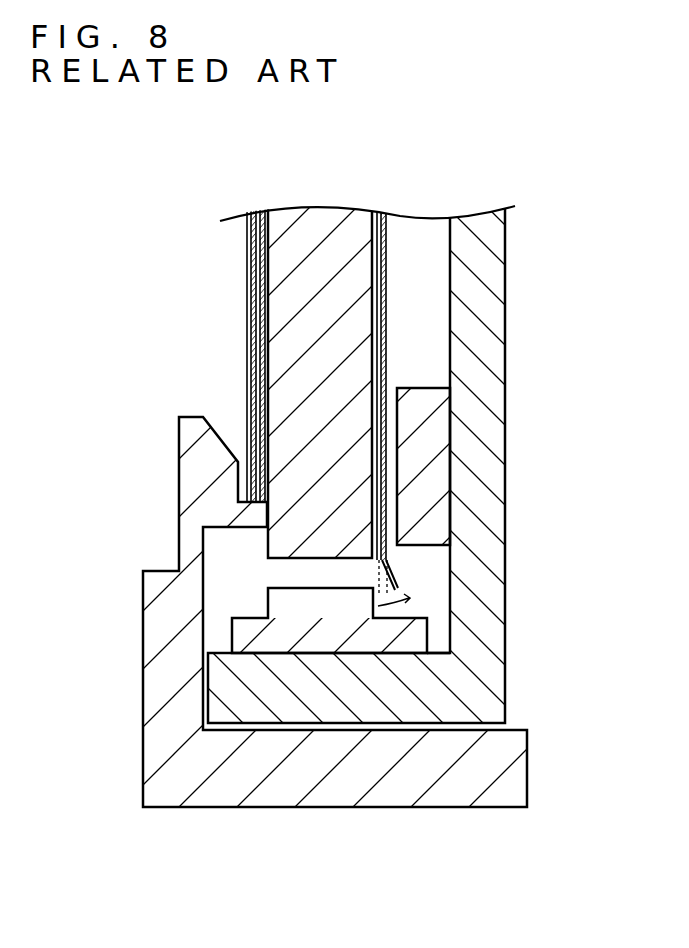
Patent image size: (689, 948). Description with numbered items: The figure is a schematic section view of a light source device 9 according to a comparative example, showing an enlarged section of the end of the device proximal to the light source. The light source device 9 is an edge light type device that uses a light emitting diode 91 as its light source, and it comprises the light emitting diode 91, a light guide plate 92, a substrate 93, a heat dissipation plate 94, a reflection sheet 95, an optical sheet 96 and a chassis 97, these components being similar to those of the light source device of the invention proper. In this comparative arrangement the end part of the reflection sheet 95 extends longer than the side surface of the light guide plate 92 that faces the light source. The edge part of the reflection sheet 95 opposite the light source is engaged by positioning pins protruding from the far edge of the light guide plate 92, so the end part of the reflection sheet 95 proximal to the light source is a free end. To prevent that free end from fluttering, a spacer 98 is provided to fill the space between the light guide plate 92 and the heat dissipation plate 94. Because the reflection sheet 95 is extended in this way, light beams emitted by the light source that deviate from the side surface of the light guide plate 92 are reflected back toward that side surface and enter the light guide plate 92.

The light source device 9 is at (110, 255).
The light emitting diode 91 is at (305, 608).
The light guide plate 92 is at (328, 215).
The substrate 93 is at (385, 643).
The heat dissipation plate 94 is at (492, 462).
The reflection sheet 95 is at (383, 234).
The optical sheet 96 is at (246, 270).
The chassis 97 is at (234, 793).
The spacer 98 is at (442, 409).